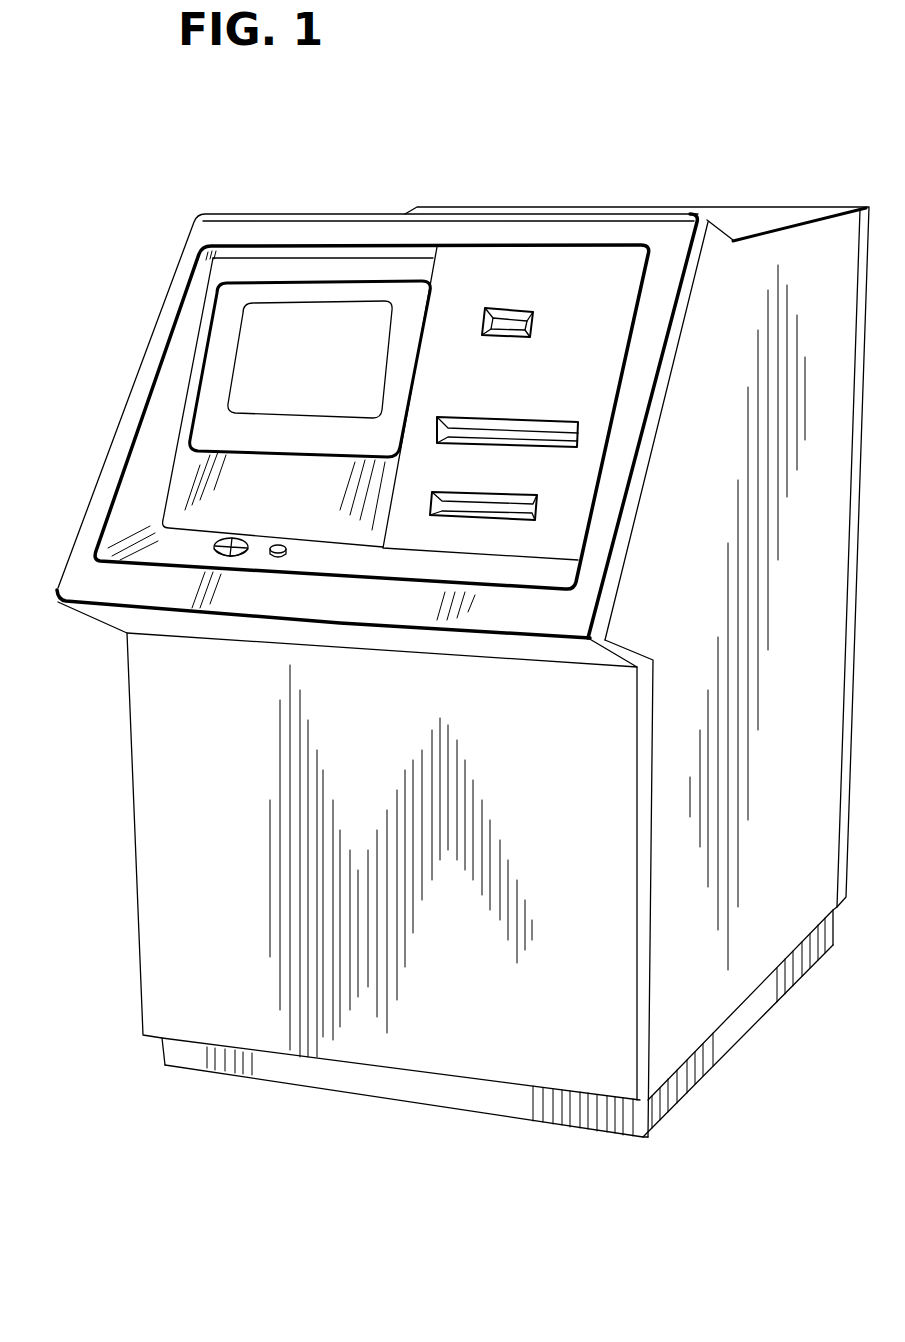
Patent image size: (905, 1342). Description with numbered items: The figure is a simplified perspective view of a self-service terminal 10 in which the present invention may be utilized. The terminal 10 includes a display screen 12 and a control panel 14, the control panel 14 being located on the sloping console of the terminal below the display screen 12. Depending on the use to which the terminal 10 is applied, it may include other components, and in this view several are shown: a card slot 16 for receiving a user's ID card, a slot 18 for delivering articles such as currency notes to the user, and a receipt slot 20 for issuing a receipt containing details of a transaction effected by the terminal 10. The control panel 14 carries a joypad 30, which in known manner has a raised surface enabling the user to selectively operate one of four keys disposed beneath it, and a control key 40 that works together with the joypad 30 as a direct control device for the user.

The self-service terminal 10 is at (122, 831).
The display screen 12 is at (253, 326).
The control panel 14 is at (155, 550).
The card slot 16 is at (535, 313).
The slot 18 is at (513, 492).
The receipt slot 20 is at (530, 420).
The joypad 30 is at (229, 540).
The control key 40 is at (281, 546).